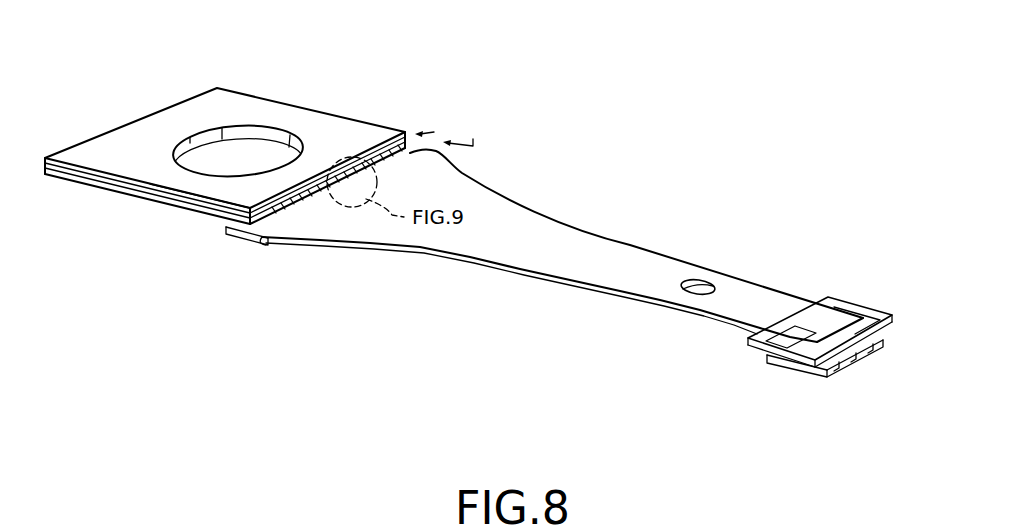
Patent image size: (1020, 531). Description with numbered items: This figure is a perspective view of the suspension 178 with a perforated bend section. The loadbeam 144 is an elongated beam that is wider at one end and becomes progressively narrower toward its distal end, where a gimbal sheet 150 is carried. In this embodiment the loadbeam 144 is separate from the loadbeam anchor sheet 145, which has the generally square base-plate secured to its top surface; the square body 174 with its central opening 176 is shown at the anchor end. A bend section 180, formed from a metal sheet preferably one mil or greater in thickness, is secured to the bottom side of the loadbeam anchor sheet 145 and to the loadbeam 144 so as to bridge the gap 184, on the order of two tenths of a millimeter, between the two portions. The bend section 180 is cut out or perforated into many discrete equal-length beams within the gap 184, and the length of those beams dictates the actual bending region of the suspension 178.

The loadbeam 144 is at (622, 257).
The loadbeam anchor sheet 145 is at (213, 220).
The gimbal sheet 150 is at (856, 303).
The base plate 174 is at (228, 100).
The aperture 176 is at (302, 148).
The suspension 178 is at (198, 298).
The bend section 180 is at (262, 240).
The gap 184 is at (454, 130).